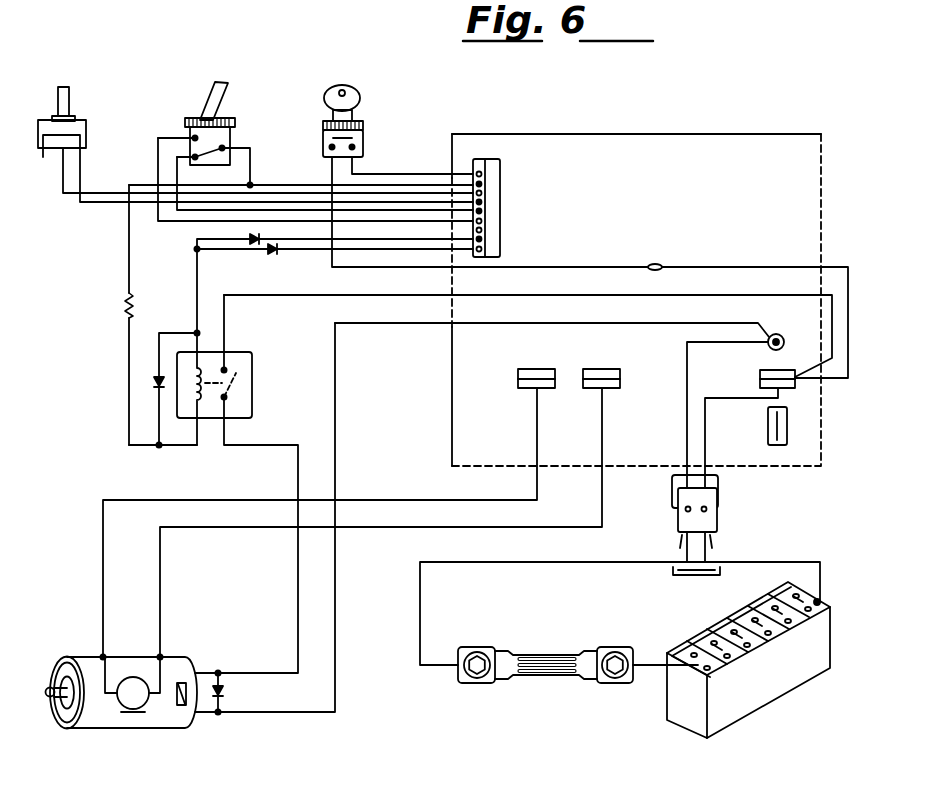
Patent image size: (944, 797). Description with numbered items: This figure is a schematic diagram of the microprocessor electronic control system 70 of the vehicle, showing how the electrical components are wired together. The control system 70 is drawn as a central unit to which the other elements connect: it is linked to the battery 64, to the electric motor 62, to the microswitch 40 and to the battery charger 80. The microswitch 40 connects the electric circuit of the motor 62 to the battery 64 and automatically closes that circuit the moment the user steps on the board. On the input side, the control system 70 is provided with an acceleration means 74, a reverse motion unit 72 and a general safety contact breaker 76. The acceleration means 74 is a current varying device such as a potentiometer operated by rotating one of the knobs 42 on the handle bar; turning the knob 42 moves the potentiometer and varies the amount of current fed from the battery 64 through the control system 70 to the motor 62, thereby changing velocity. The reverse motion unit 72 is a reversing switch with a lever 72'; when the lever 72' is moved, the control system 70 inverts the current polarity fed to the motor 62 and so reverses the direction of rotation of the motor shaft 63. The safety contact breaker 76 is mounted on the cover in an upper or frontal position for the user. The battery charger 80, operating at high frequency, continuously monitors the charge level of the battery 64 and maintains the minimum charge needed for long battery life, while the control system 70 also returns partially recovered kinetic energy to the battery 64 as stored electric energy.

The knob 42 is at (67, 87).
The acceleration means 74 is at (80, 126).
The reverse motion unit 72 is at (226, 139).
The lever 72' is at (233, 77).
The general safety contact breaker 76 is at (357, 97).
The microprocessor electronic control system 70 is at (766, 146).
The microswitch 40 is at (243, 396).
The electric motor 62 is at (94, 661).
The motor shaft 63 is at (60, 706).
The battery charger 80 is at (500, 678).
The battery 64 is at (782, 683).